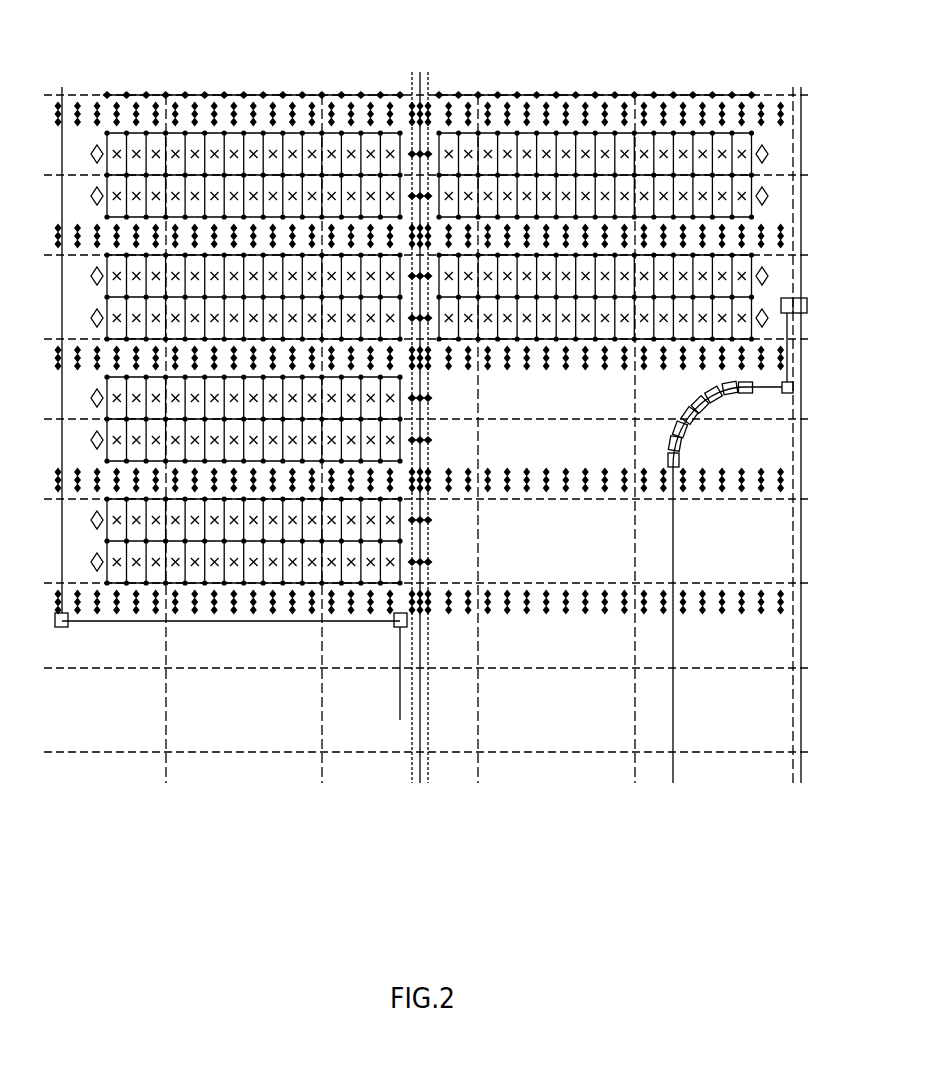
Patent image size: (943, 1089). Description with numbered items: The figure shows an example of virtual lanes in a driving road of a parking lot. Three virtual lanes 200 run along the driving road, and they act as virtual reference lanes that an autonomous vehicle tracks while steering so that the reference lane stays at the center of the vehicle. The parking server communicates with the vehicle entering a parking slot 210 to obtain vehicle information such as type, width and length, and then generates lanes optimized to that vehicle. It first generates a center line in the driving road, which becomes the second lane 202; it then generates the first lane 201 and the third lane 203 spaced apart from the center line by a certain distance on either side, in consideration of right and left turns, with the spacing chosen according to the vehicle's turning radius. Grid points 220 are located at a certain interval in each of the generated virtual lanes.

The virtual lanes 200 is at (421, 413).
The first lane 201 is at (411, 81).
The second lane 202 is at (420, 72).
The third lane 203 is at (429, 81).
The parking slot 210 is at (718, 165).
The grid points 220 is at (488, 470).